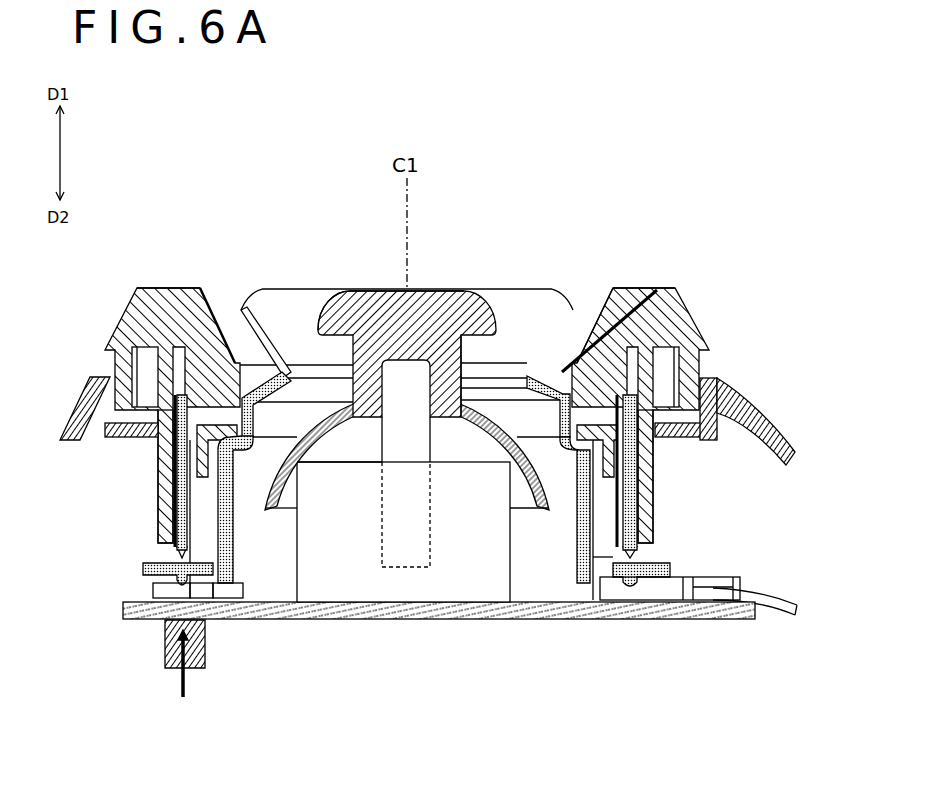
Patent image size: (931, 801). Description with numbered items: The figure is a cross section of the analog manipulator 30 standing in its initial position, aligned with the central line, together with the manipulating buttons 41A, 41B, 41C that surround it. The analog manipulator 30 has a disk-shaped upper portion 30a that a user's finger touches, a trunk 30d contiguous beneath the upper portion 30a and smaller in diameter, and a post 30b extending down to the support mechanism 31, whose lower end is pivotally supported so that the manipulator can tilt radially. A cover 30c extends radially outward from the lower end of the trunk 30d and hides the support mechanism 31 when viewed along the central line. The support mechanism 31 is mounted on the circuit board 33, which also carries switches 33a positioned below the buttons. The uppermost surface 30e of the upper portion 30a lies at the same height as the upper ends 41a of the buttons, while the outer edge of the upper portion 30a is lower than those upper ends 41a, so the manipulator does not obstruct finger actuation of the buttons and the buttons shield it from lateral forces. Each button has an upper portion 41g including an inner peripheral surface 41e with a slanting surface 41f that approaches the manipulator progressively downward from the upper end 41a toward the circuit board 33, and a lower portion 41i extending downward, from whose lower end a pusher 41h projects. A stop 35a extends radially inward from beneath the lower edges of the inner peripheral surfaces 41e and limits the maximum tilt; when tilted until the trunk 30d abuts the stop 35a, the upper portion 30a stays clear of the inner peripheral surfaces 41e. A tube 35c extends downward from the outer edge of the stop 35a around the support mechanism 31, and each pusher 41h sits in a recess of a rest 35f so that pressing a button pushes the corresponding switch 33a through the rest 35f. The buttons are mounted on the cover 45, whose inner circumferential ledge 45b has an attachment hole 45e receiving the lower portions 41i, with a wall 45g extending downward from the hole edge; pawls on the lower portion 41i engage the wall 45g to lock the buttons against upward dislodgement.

The analog manipulator 30 is at (470, 290).
The upper portion 30a is at (437, 300).
The post 30b is at (424, 442).
The cover 30c is at (307, 457).
The trunk 30d is at (459, 342).
The uppermost surface 30e is at (407, 289).
The support mechanism 31 is at (480, 584).
The circuit board 33 is at (393, 612).
The switch 33a is at (148, 596).
The stop 35a is at (527, 377).
The tube 35c is at (234, 544).
The rest 35f is at (156, 580).
The manipulating button 41A is at (112, 320).
The manipulating button 41B is at (310, 282).
The manipulating button 41C is at (702, 318).
The upper end 41a is at (150, 287).
The inner peripheral surface 41e is at (205, 312).
The slanting surface 41f is at (248, 343).
The upper portion 41g is at (303, 436).
The pusher 41h is at (168, 552).
The lower portion 41i is at (158, 510).
The cover 45 is at (768, 436).
The inner circumferential ledge 45b is at (128, 422).
The attachment hole 45e is at (158, 453).
The wall 45g is at (160, 482).